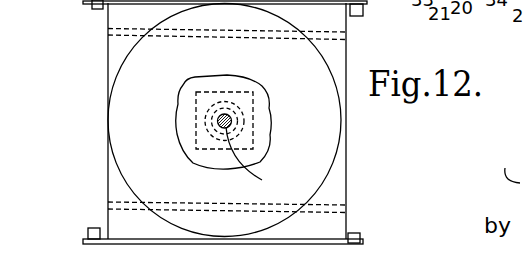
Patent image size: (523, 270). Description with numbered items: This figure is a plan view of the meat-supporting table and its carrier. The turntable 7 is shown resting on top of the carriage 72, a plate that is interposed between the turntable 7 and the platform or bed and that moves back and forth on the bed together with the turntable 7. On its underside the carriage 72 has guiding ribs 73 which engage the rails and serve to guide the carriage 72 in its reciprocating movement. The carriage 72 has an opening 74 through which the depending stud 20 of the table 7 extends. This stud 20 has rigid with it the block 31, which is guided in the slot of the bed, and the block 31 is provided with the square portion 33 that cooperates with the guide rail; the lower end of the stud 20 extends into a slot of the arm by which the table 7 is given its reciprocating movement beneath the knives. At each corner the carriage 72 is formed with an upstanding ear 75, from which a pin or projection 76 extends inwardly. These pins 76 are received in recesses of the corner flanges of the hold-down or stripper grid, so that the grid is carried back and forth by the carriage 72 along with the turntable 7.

The meat-supporting table 7 is at (346, 173).
The depending stud 20 is at (231, 120).
The block 31 is at (196, 110).
The square portion 33 is at (255, 104).
The carriage 72 is at (117, 58).
The guiding ribs 73 is at (215, 37).
The opening 74 is at (259, 162).
The upstanding ear 75 is at (84, 2).
The pin or projection 76 is at (98, 8).